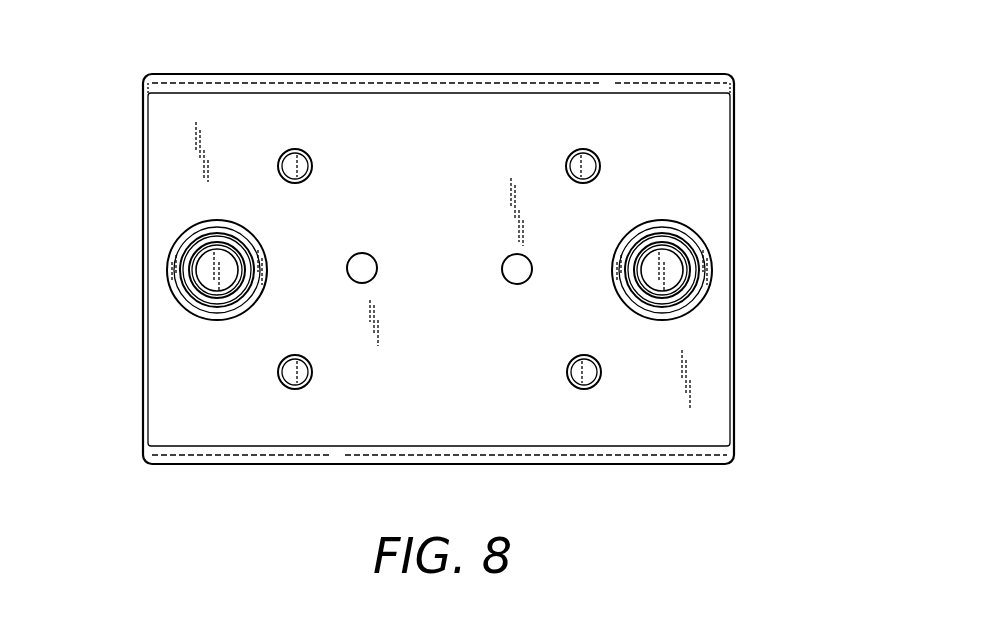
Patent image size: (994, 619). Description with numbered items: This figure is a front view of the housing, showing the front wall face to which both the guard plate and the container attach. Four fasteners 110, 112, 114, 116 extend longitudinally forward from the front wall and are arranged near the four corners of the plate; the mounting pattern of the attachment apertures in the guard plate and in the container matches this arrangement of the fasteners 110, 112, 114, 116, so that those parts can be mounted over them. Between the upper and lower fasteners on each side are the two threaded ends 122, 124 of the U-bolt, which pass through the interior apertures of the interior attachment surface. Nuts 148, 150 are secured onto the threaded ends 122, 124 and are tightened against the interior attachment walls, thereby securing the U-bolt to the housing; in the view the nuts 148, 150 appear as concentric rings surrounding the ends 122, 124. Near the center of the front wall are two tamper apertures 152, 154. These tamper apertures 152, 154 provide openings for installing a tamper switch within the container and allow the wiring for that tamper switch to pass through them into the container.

The fastener 110 is at (293, 167).
The fastener 112 is at (290, 376).
The fastener 114 is at (585, 168).
The fastener 116 is at (590, 372).
The threaded end of U-bolt 122 is at (716, 250).
The threaded end of U-bolt 124 is at (159, 249).
The nut 148 is at (178, 262).
The nut 150 is at (688, 270).
The tamper aperture 152 is at (356, 282).
The tamper aperture 154 is at (519, 284).